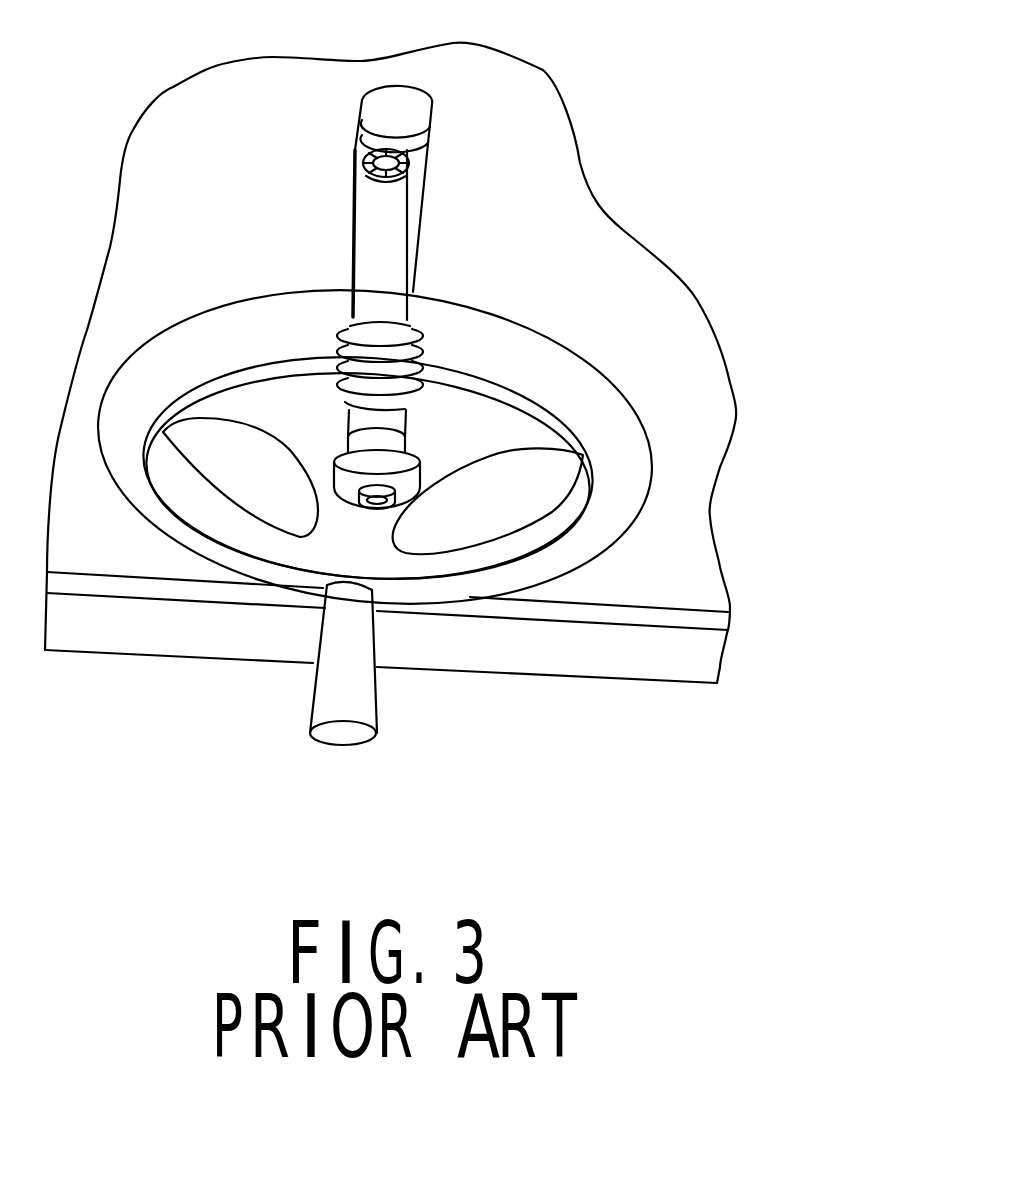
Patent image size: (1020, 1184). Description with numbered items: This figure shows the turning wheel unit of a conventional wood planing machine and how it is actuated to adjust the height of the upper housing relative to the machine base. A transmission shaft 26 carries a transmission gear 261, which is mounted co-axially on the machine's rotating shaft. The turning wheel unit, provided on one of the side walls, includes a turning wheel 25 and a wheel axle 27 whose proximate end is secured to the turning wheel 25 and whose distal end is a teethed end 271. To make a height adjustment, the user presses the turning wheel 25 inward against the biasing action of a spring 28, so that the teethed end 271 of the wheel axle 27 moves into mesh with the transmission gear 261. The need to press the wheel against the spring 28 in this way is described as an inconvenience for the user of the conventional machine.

The turning wheel 25 is at (600, 527).
The transmission shaft 26 is at (405, 130).
The transmission gear 261 is at (405, 160).
The wheel axle 27 is at (387, 260).
The teethed end 271 is at (388, 178).
The spring 28 is at (423, 351).